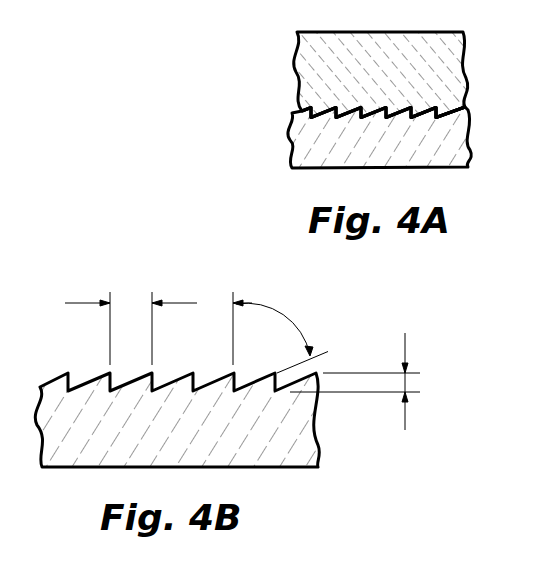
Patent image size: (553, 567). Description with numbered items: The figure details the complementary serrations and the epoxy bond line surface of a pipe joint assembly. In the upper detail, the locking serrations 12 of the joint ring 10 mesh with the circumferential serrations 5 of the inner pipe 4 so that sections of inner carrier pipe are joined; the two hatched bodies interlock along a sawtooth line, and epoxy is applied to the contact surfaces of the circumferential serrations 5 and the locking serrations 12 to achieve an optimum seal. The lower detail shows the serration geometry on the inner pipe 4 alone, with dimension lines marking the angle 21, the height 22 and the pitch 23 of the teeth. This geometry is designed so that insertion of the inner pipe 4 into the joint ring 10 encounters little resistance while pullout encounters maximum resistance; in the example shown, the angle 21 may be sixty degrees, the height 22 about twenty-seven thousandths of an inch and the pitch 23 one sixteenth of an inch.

In FIG. 4A, the inner pipe 4 is at (290, 125).
In FIG. 4B, the inner pipe 4 is at (320, 456).
In FIG. 4A, the circumferential serrations 5 is at (438, 119).
In FIG. 4A, the joint ring 10 is at (292, 75).
In FIG. 4A, the locking serrations 12 is at (470, 70).
In FIG. 4B, the angle 21 is at (283, 313).
In FIG. 4B, the height 22 is at (407, 384).
In FIG. 4B, the pitch 23 is at (131, 301).